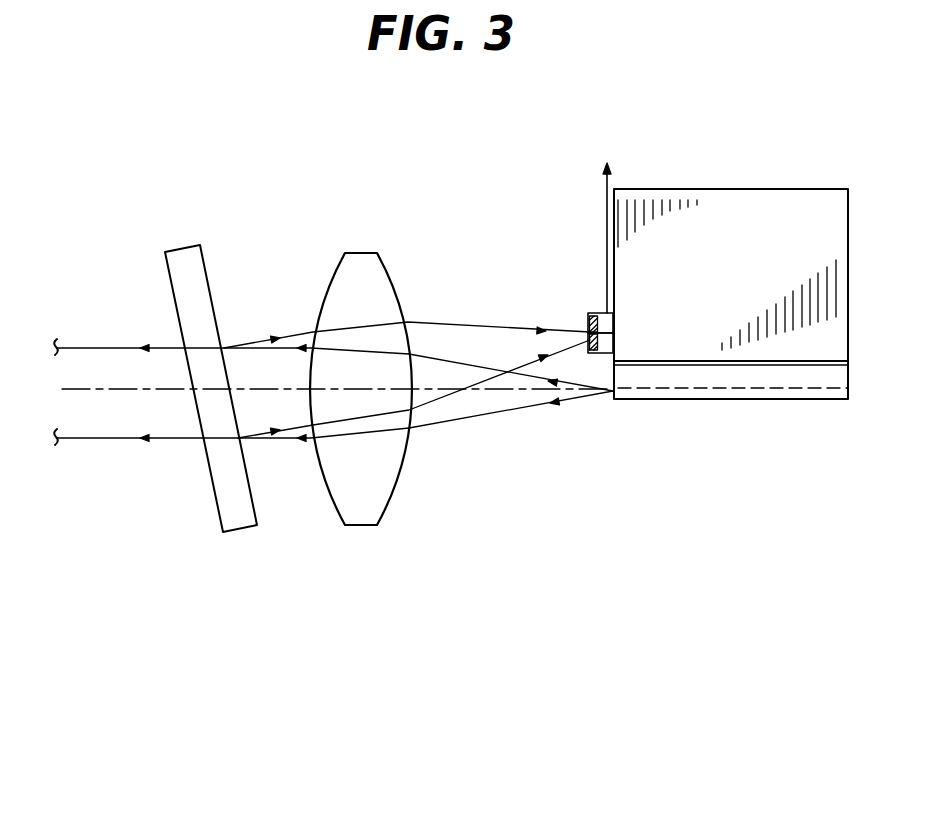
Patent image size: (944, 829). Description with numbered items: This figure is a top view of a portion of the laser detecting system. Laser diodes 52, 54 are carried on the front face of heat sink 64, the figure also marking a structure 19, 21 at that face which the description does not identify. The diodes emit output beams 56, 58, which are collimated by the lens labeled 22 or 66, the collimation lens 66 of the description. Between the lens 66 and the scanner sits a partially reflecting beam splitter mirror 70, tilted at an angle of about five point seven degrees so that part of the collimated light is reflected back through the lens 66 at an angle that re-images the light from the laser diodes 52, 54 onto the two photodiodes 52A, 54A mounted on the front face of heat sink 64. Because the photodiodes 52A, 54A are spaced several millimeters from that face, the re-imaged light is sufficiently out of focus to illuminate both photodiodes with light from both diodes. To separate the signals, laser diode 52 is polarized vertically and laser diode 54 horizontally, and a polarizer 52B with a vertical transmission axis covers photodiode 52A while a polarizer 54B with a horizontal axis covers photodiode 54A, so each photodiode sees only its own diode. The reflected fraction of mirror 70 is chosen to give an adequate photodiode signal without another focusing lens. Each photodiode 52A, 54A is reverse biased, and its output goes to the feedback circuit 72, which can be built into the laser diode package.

The optical disk 19 is at (731, 405).
The recording surface 21 is at (627, 414).
The objective lens 22 is at (321, 367).
The collimation lens 66 is at (363, 253).
The laser diode 52 is at (515, 419).
The laser diode 54 is at (511, 419).
The photodiode 52A is at (528, 262).
The photodiode 54A is at (598, 316).
The polarizer 52B is at (527, 291).
The polarizer 54B is at (585, 317).
The output beam 56 is at (503, 402).
The output beam 58 is at (527, 272).
The heat sink 64 is at (755, 207).
The partially reflecting beam splitter mirror 70 is at (242, 520).
The feedback circuit 72 is at (608, 180).